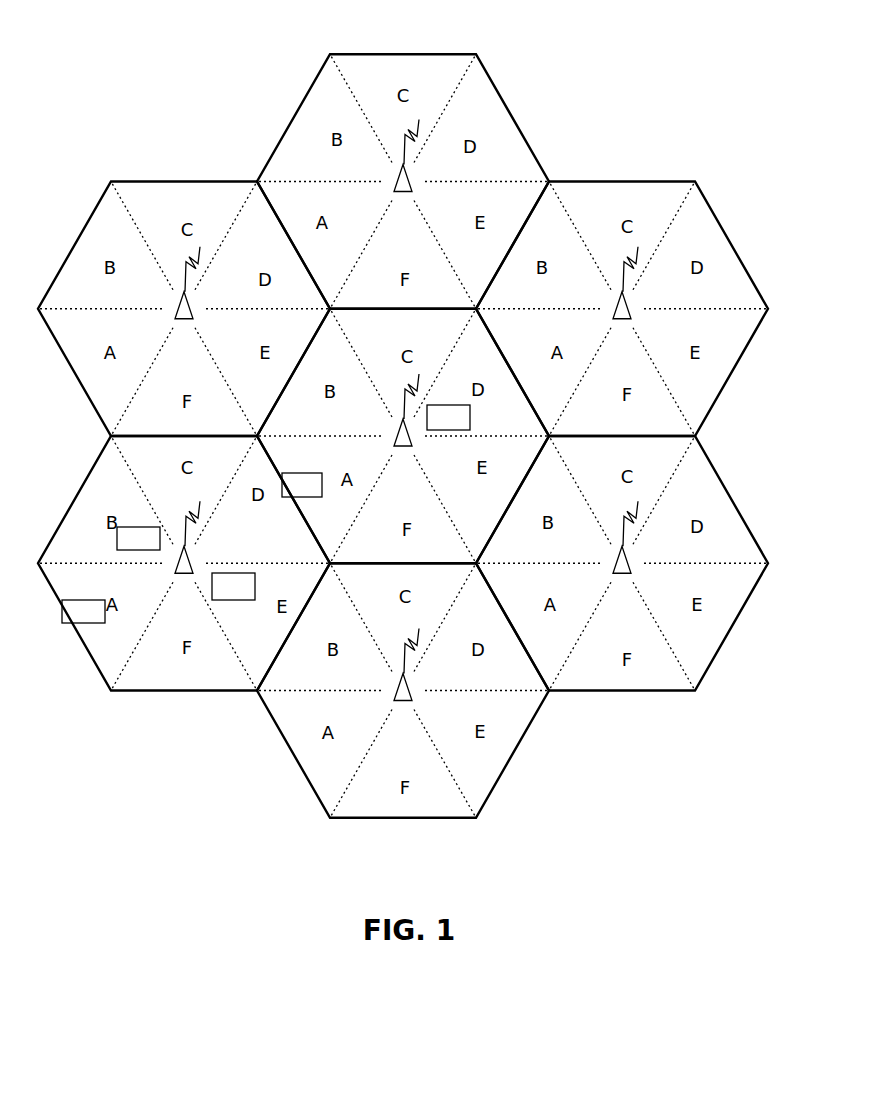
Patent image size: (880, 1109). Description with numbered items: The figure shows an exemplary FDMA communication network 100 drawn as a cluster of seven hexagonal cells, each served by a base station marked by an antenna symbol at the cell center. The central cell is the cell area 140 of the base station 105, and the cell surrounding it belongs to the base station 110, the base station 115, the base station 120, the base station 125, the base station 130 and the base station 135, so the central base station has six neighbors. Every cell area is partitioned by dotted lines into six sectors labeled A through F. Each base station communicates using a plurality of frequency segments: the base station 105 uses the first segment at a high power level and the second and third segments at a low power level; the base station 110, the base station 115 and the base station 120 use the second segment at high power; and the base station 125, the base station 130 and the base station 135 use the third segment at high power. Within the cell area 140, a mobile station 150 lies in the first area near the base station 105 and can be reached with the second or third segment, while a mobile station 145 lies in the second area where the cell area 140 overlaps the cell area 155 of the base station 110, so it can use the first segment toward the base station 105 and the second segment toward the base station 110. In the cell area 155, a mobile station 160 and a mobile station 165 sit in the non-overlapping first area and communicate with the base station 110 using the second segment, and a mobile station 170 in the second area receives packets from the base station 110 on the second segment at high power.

The FDMA communication network 100 is at (228, 52).
The base station 105 is at (382, 410).
The base station 110 is at (161, 558).
The base station 115 is at (428, 156).
The base station 120 is at (649, 537).
The base station 125 is at (165, 283).
The base station 130 is at (646, 283).
The base station 135 is at (429, 685).
The cell area 140 is at (408, 436).
The mobile station 145 is at (313, 449).
The mobile station 150 is at (458, 389).
The cell area 155 is at (170, 563).
The mobile station 160 is at (242, 554).
The mobile station 165 is at (147, 504).
The mobile station 170 is at (68, 640).